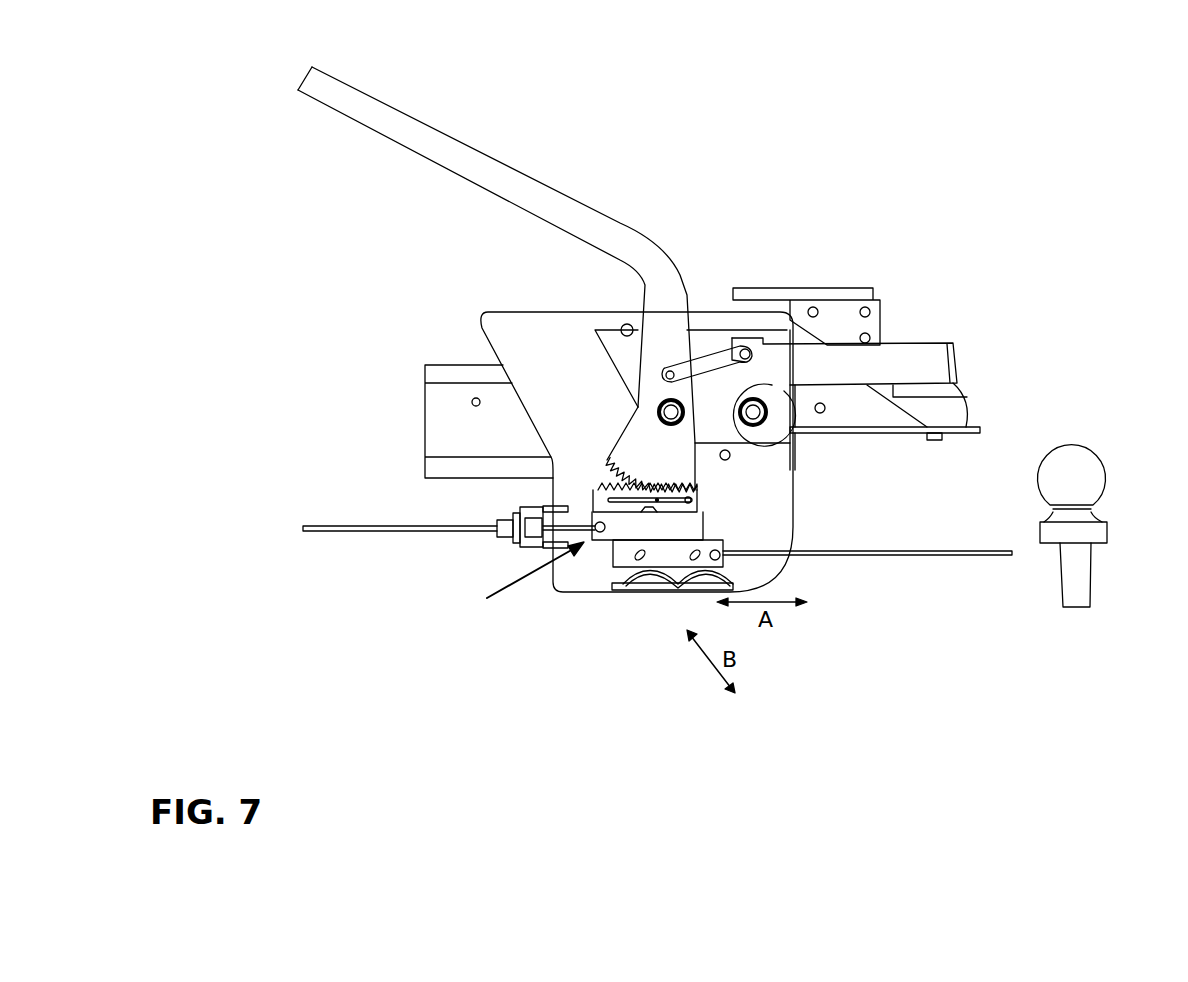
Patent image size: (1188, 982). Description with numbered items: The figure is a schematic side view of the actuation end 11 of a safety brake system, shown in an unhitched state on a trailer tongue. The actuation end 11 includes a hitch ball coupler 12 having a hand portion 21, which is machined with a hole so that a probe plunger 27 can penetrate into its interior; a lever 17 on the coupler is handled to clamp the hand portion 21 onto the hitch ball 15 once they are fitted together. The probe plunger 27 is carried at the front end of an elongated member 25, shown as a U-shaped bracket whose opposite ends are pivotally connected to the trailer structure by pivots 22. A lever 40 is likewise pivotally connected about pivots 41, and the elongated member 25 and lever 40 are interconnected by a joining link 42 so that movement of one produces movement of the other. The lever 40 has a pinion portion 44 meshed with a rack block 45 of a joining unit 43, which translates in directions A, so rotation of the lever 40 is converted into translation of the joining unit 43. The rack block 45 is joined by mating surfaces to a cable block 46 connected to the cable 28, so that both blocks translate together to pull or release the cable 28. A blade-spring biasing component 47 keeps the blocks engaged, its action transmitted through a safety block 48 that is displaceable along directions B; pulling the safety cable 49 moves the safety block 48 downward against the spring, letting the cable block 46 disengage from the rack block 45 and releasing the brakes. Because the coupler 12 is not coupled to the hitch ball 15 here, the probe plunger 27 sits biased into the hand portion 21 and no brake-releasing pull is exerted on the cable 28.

The actuation end 11 is at (808, 150).
The hitch ball coupler 12 is at (523, 320).
The hitch ball 15 is at (1102, 455).
The lever 17 is at (825, 287).
The hand portion 21 is at (958, 403).
The pivots 22 is at (765, 407).
The elongated member 25 is at (953, 345).
The probe plunger 27 is at (942, 437).
The cable 28 is at (405, 528).
The lever 40 is at (387, 105).
The pivots 41 is at (658, 416).
The joining link 42 is at (708, 360).
The joining unit 43 is at (509, 584).
The pinion portion 44 is at (607, 460).
The rack block 45 is at (570, 483).
The cable block 46 is at (673, 529).
The biasing component 47 is at (613, 593).
The safety block 48 is at (617, 548).
The safety cable 49 is at (842, 556).